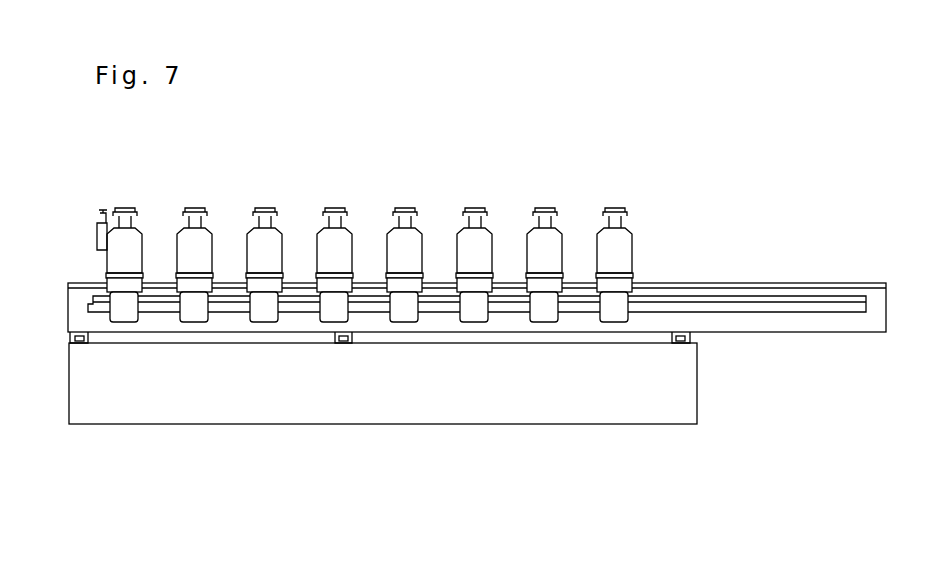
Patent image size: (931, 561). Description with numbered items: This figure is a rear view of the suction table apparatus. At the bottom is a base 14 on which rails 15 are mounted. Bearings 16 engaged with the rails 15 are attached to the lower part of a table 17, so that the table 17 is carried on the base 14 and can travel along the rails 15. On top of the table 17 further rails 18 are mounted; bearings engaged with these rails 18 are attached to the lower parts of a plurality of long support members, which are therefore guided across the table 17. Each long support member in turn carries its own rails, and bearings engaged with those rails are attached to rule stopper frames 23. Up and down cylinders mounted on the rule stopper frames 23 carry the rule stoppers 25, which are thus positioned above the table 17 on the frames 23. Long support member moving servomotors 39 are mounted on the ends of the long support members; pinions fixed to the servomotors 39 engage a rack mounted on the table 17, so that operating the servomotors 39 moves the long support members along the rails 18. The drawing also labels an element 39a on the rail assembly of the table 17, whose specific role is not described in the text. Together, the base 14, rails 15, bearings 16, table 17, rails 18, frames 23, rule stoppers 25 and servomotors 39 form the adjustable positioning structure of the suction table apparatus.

The base 14 is at (537, 405).
The rails 15 is at (82, 343).
The bearings 16 is at (75, 333).
The table 17 is at (822, 323).
The rails 18 is at (801, 283).
The rule stopper frames 23 is at (393, 235).
The rule stoppers 25 is at (332, 208).
The long support member moving servomotors 39 is at (123, 305).
The guide rail 39a is at (445, 298).